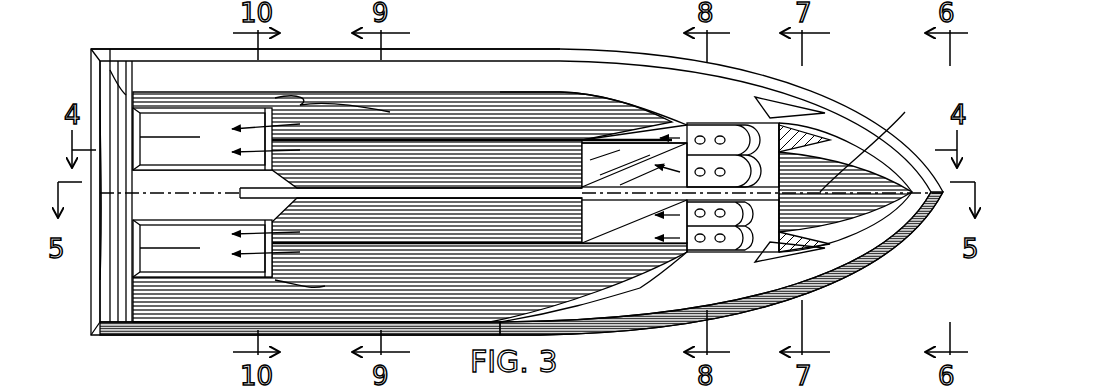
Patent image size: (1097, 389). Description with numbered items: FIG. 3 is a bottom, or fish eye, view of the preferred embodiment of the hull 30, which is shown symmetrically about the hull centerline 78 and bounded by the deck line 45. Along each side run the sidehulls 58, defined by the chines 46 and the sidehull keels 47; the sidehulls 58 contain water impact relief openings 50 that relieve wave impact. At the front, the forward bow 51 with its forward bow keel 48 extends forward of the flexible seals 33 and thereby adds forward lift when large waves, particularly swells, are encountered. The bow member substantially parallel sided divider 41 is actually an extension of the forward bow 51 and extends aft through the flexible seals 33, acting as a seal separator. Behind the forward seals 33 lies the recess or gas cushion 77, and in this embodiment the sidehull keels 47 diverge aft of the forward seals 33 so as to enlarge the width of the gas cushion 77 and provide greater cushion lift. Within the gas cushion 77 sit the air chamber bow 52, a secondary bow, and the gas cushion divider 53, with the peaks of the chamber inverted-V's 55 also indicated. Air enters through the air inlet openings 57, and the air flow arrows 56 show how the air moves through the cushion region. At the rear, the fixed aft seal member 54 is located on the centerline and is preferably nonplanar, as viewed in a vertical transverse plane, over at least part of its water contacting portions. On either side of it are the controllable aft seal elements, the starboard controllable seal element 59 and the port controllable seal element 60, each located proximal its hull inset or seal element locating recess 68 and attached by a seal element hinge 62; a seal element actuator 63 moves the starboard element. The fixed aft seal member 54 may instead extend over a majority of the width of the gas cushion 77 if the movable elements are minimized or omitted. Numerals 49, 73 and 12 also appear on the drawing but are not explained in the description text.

The hull 30 is at (480, 49).
The deck line 45 is at (590, 50).
The transom 49 is at (132, 88).
The hull centerline 78 is at (100, 240).
The peak of chamber inverted-V's 55 is at (412, 138).
The air flow arrows 56 is at (543, 225).
The seal element hinge 62 is at (300, 212).
The seal element actuator 63 is at (296, 103).
The seal element locating recess 68 is at (315, 277).
The gas cushion 77 is at (480, 228).
The gas cushion divider 53 is at (530, 190).
The starboard controllable seal element 59 is at (205, 137).
The port controllable seal element 60 is at (205, 268).
The fixed aft seal member 54 is at (208, 204).
The air chamber bow 52 is at (634, 156).
The air inlet openings 57 is at (720, 136).
The flexible seals 33 is at (745, 128).
The water impact relief openings 50 is at (790, 100).
The forward bow 51 is at (690, 270).
The bow member substantially parallel sided divider 41 is at (779, 187).
The forward bow keel 48 is at (872, 143).
The chines 46 is at (518, 92).
The sidehull keels 47 is at (572, 94).
The sidehulls 58 is at (686, 100).
The fitting 73 is at (770, 379).
The hull 12 is at (634, 379).